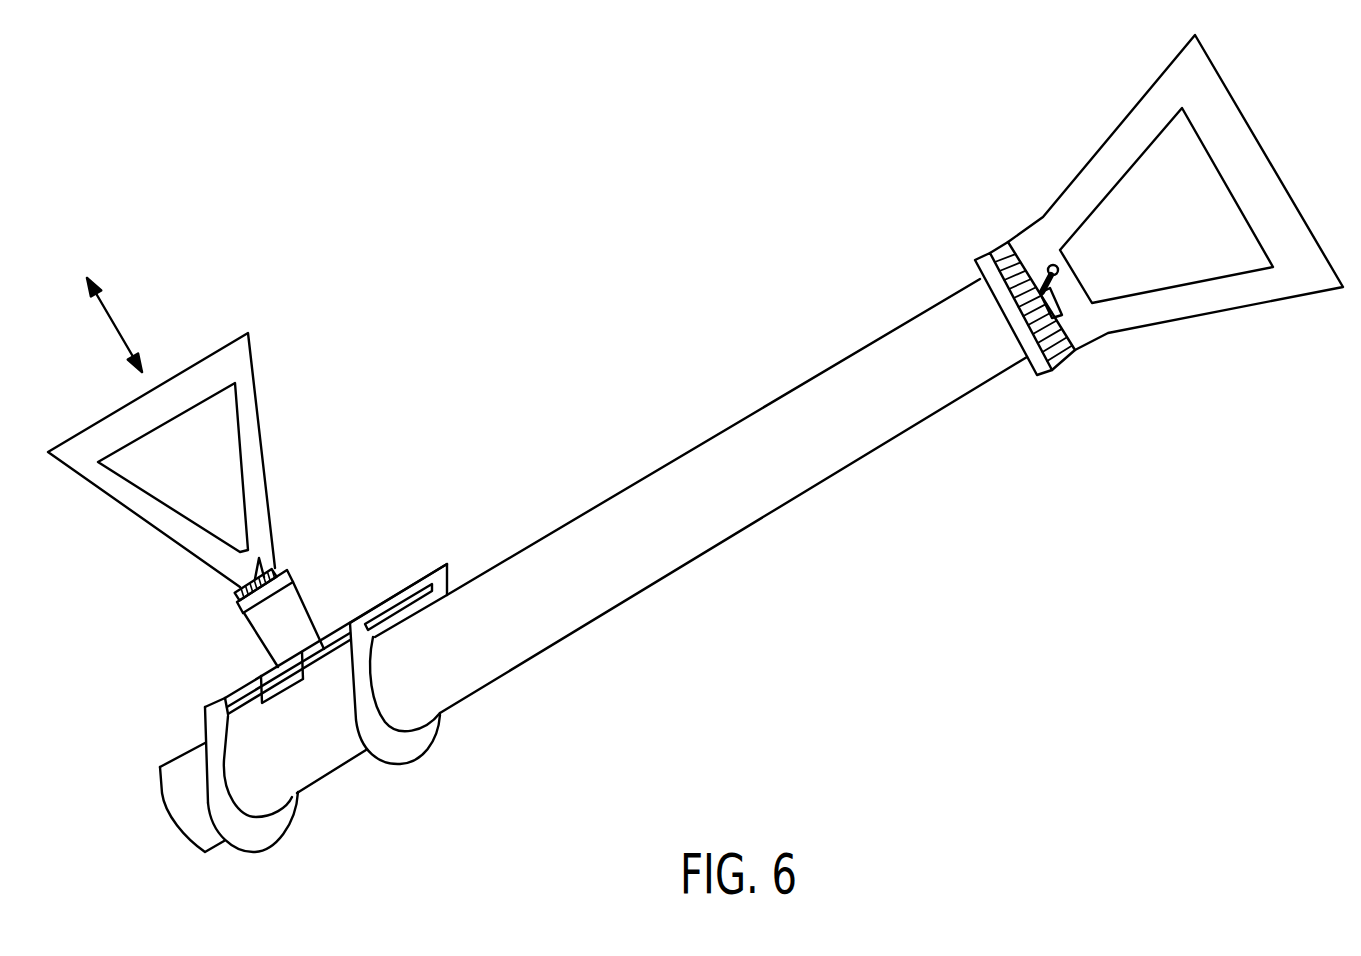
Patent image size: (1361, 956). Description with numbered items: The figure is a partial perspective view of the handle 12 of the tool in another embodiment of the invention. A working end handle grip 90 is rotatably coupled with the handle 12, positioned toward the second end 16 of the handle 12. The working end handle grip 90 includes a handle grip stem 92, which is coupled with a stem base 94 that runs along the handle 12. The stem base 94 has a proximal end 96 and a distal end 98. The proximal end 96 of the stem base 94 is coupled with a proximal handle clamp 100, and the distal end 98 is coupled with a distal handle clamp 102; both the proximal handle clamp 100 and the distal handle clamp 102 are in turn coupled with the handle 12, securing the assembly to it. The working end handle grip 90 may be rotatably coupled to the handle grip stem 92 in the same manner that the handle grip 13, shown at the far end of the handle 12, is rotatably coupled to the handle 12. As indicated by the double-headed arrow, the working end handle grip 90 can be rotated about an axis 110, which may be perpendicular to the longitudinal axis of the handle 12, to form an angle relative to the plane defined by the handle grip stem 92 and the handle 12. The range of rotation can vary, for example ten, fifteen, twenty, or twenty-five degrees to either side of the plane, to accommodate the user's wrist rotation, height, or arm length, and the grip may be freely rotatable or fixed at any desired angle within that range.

The handle 12 is at (650, 543).
The handle grip 13 is at (1142, 122).
The second end 16 is at (170, 773).
The working end handle grip 90 is at (243, 373).
The handle grip stem 92 is at (293, 627).
The stem base 94 is at (257, 668).
The proximal end 96 is at (341, 638).
The distal end 98 is at (223, 697).
The proximal handle clamp 100 is at (405, 748).
The distal handle clamp 102 is at (265, 833).
The axis 110 is at (130, 307).